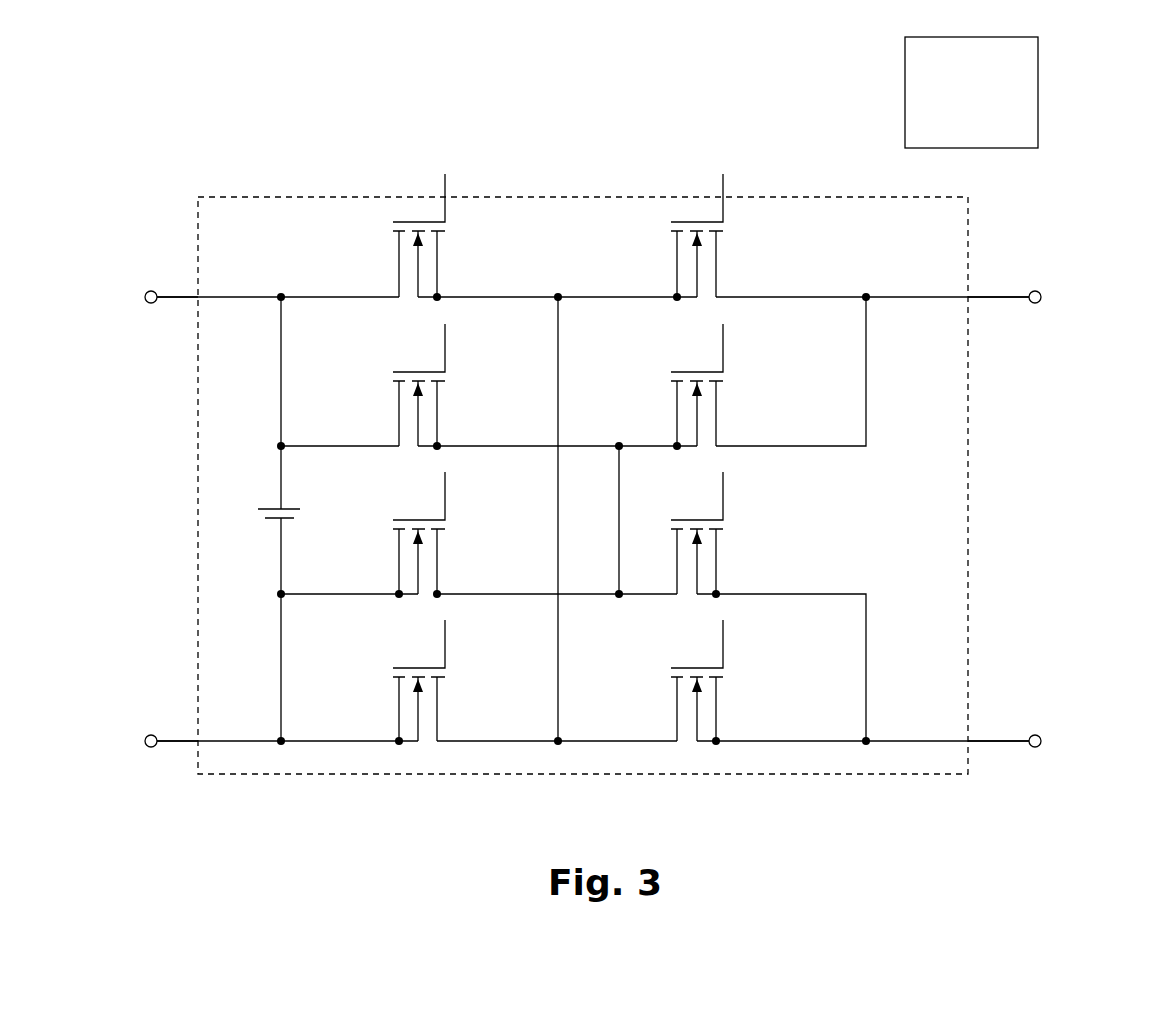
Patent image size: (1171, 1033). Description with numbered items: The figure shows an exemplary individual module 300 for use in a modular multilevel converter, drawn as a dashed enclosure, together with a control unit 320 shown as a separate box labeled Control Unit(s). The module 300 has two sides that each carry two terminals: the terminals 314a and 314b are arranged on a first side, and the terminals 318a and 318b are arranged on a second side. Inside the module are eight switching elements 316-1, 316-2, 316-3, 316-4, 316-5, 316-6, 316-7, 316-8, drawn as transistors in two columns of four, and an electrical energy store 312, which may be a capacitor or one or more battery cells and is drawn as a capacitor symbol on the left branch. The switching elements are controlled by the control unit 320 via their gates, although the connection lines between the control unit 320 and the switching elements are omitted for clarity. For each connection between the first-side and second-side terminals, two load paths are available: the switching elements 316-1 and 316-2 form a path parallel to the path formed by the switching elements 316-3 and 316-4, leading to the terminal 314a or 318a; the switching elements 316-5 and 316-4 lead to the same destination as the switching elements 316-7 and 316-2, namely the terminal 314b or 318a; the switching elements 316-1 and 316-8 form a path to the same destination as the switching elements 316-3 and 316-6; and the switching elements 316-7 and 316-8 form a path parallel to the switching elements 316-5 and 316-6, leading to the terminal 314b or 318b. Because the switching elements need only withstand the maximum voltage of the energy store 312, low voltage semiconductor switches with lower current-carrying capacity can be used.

The individual module 300 is at (193, 187).
The electrical energy store 312 is at (270, 508).
The terminal 314a is at (145, 296).
The terminal 314b is at (145, 745).
The switching element 316-1 is at (418, 220).
The switching element 316-2 is at (698, 220).
The switching element 316-3 is at (410, 368).
The switching element 316-4 is at (740, 368).
The switching element 316-5 is at (410, 516).
The switching element 316-6 is at (740, 516).
The switching element 316-7 is at (410, 663).
The switching element 316-8 is at (740, 663).
The terminal 318a is at (1041, 295).
The terminal 318b is at (1041, 745).
The control unit(s) 320 is at (1040, 85).